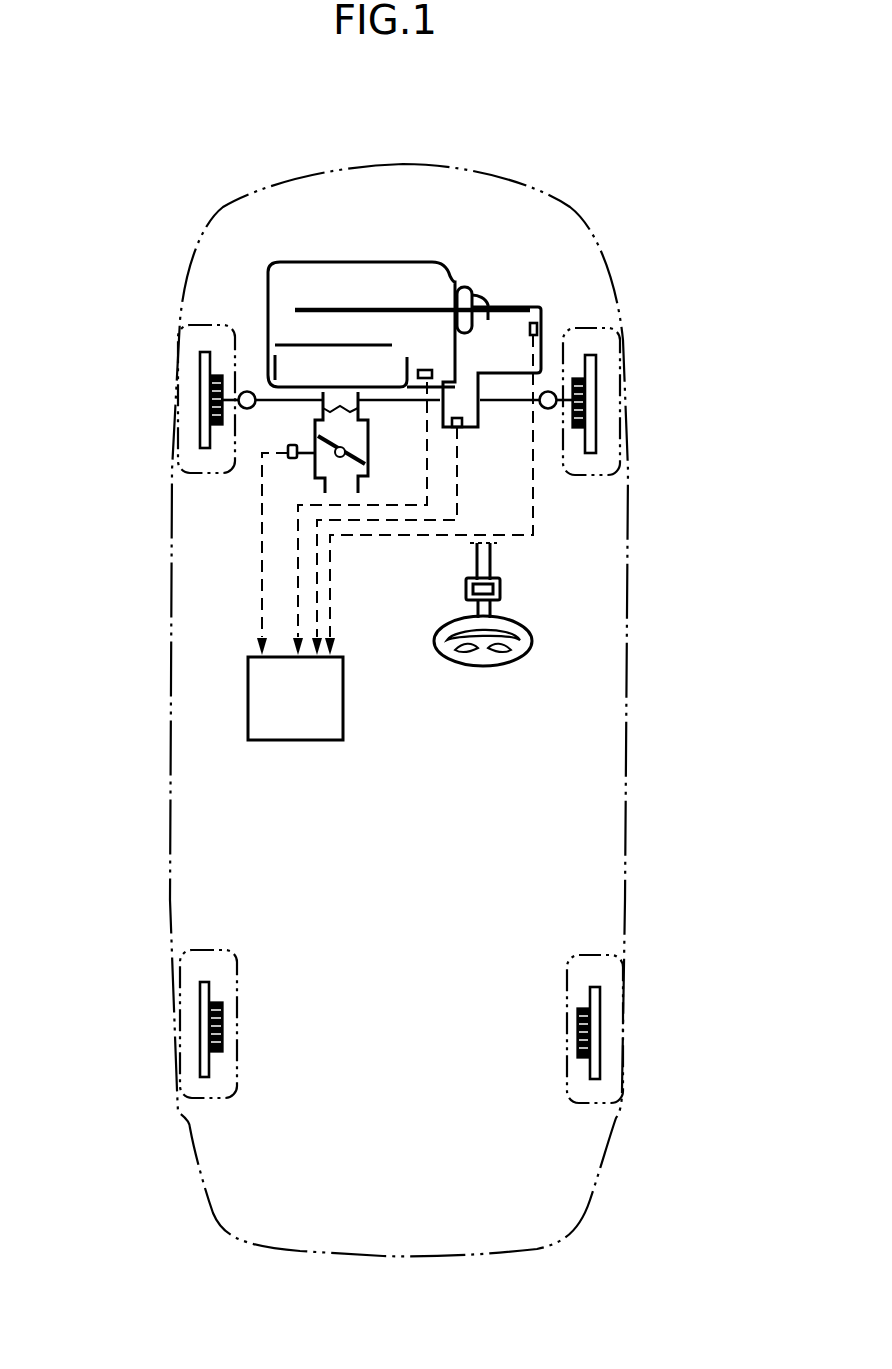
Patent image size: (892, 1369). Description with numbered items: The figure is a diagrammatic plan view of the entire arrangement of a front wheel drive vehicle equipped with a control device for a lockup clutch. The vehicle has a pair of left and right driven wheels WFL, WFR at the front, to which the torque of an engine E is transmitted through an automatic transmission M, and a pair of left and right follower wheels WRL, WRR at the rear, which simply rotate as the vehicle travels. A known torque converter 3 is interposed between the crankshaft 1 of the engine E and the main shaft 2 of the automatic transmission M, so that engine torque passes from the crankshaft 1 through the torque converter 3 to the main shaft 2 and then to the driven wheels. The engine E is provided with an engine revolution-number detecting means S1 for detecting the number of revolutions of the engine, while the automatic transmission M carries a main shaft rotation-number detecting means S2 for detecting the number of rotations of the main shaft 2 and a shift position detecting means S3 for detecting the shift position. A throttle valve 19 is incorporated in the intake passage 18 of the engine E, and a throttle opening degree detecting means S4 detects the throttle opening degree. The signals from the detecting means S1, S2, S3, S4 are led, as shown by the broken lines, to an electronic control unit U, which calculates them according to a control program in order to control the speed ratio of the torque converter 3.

The engine E is at (378, 262).
The crankshaft 1 is at (318, 308).
The main shaft 2 is at (487, 300).
The torque converter 3 is at (465, 287).
The automatic transmission M is at (500, 303).
The engine revolution-number detecting means S1 is at (425, 370).
The main shaft rotation-number detecting means S2 is at (529, 331).
The shift position detecting means S3 is at (460, 427).
The throttle opening degree detecting means S4 is at (293, 445).
The intake passage 18 is at (323, 487).
The throttle valve 19 is at (337, 440).
The electronic control unit U is at (303, 714).
The left driven wheel WFL is at (177, 383).
The right driven wheel WFR is at (623, 403).
The left follower wheel WRL is at (181, 1002).
The right follower wheel WRR is at (622, 1010).